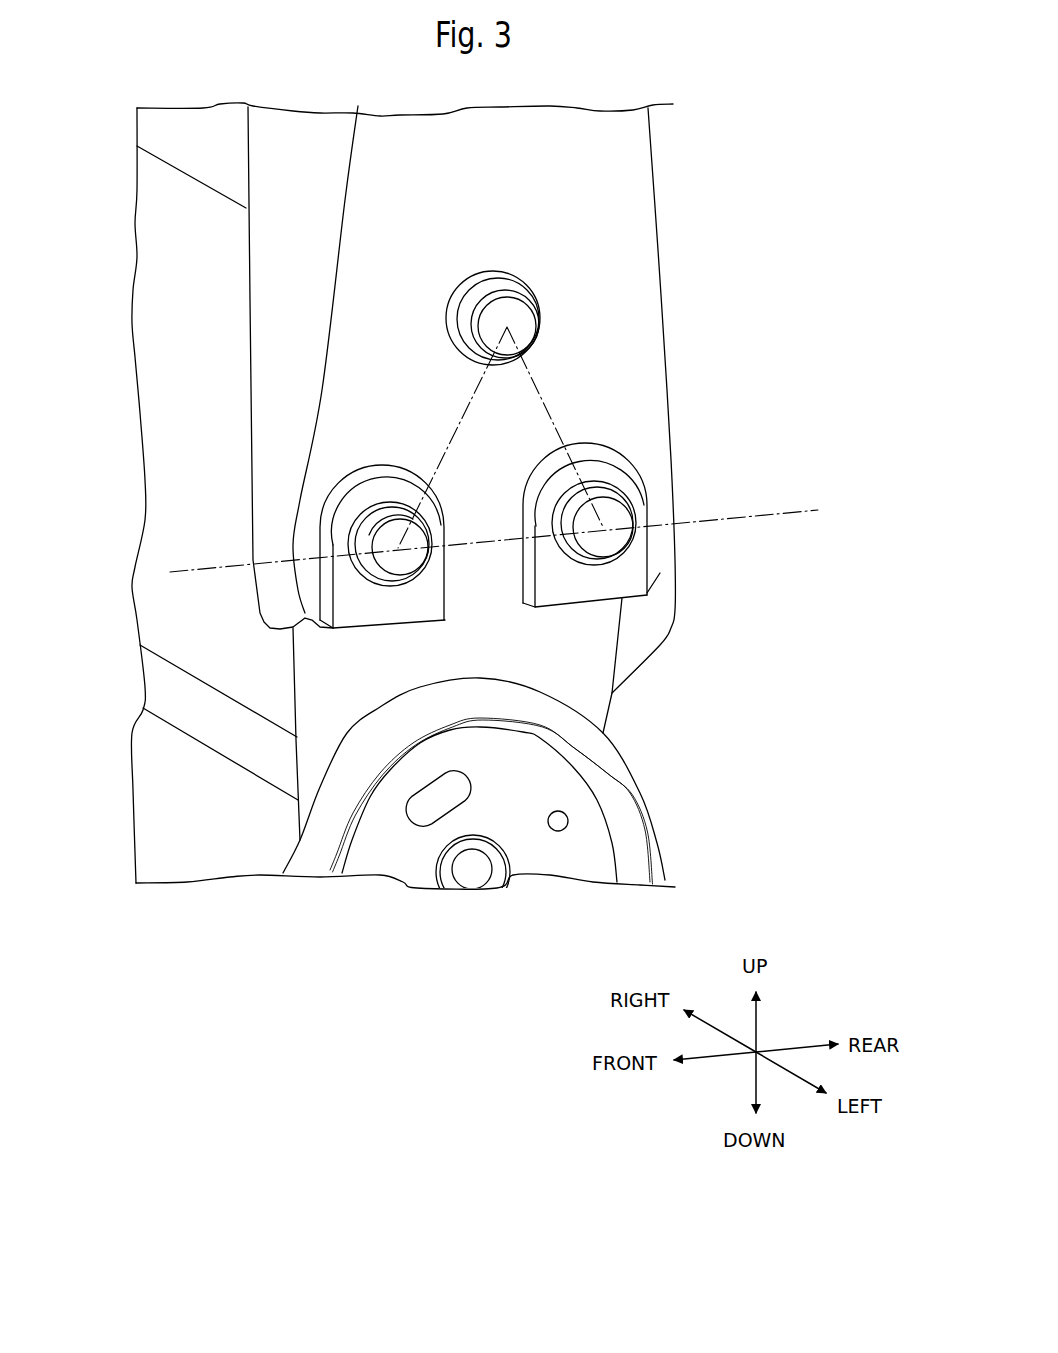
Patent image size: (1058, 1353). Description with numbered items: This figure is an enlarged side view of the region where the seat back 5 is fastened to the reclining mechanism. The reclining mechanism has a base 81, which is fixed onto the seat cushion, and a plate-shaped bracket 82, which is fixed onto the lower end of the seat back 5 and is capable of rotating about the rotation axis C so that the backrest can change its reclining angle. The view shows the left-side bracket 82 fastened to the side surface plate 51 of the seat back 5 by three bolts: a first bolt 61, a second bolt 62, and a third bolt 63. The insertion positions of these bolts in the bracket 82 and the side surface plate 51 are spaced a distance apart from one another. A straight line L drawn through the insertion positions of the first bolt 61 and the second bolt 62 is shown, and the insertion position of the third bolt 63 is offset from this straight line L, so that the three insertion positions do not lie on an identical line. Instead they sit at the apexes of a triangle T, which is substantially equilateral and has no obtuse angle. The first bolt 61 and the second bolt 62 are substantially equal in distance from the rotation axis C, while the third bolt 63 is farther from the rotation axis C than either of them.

The seat back 5 is at (457, 494).
The side surface plate 51 is at (627, 233).
The third bolt 63 is at (589, 318).
The triangle T is at (552, 410).
The straight line L is at (720, 515).
The first bolt 61 is at (393, 560).
The second bolt 62 is at (605, 537).
The bracket 82 is at (516, 726).
The base 81 is at (538, 801).
The rotation axis C is at (581, 866).